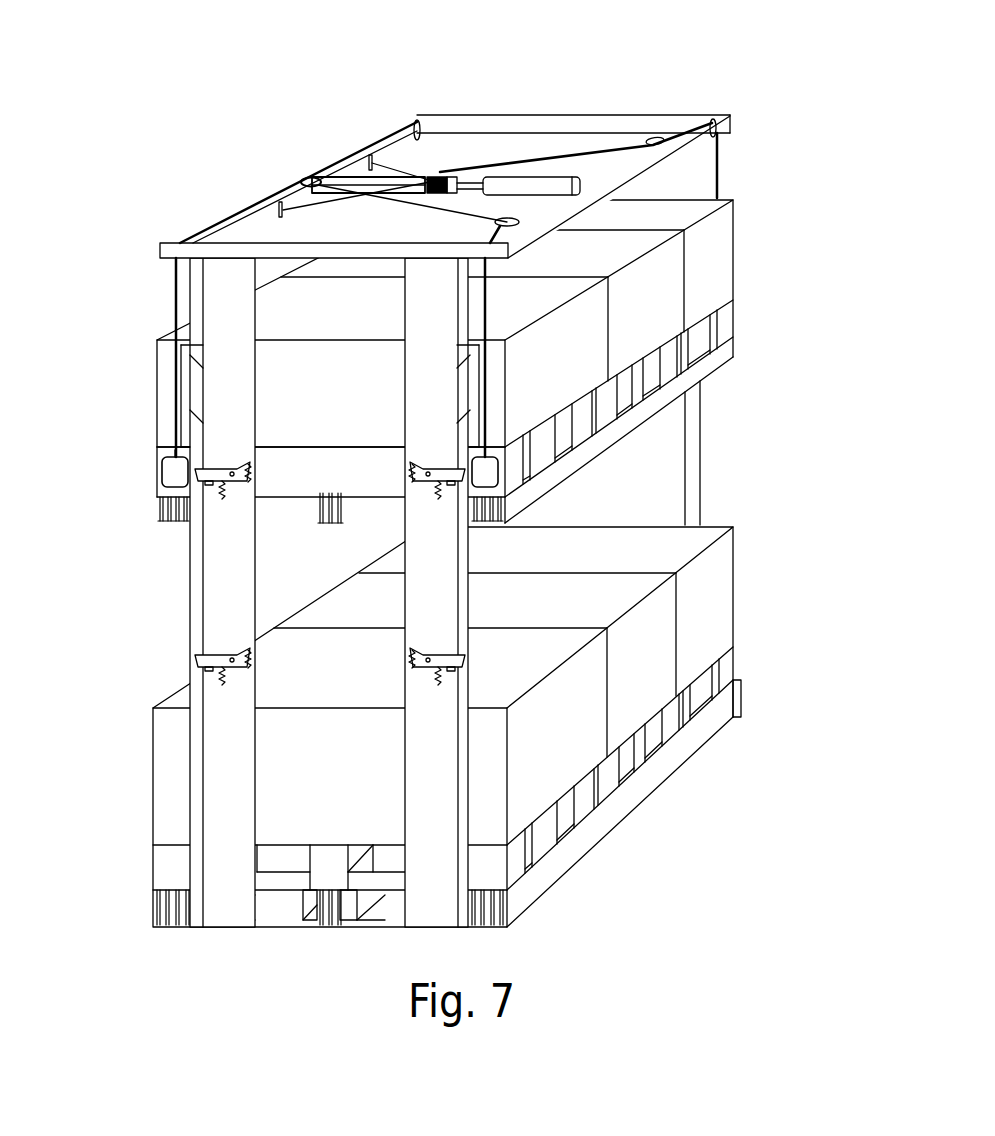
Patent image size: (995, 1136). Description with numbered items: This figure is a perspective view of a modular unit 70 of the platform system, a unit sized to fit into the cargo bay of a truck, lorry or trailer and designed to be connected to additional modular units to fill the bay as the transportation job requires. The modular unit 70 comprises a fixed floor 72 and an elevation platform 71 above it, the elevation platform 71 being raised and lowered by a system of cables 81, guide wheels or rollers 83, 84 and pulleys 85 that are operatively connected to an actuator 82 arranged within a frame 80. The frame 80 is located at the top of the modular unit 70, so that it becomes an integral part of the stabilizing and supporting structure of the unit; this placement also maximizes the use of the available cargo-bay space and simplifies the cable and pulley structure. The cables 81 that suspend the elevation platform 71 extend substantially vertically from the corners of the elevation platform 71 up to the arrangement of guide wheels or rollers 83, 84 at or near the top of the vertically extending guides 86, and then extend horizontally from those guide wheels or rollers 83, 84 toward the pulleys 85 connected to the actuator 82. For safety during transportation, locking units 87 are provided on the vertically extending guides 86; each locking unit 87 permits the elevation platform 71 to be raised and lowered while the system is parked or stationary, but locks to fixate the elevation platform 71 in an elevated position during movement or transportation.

The modular unit 70 is at (503, 90).
The elevation platform 71 is at (742, 351).
The fixed floor 72 is at (625, 828).
The frame 80 is at (157, 248).
The cables 81 is at (733, 163).
The actuator 82 is at (530, 172).
The guide wheel or roller 83 is at (418, 116).
The guide wheel or roller 84 is at (655, 135).
The pulleys 85 is at (304, 170).
The vertically extending guides 86 is at (703, 457).
The locking unit 87 is at (190, 652).